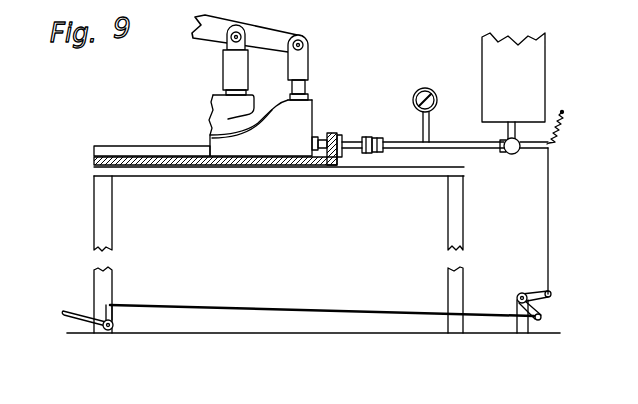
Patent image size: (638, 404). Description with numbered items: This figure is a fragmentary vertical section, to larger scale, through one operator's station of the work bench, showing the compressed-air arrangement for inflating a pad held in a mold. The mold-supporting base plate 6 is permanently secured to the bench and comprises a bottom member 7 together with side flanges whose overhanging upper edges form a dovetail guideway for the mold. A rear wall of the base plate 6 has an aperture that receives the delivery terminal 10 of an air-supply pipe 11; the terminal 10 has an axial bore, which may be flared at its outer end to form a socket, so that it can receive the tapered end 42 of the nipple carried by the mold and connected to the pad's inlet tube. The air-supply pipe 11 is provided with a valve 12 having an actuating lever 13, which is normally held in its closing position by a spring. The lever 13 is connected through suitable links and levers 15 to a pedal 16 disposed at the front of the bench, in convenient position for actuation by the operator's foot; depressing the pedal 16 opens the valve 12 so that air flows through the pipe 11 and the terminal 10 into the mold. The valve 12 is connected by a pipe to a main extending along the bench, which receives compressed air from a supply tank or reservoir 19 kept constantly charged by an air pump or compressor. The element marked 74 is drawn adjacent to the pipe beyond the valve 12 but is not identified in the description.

The mold-supporting base plate 6 is at (90, 148).
The bottom member 7 is at (182, 160).
The tapered end 42 is at (331, 135).
The delivery terminal 10 is at (341, 135).
The air-supply pipe 11 is at (400, 140).
The supply tank 19 is at (491, 68).
The control rod 74 is at (557, 131).
The valve 12 is at (508, 154).
The actuating lever 13 is at (532, 149).
The links and levers 15 is at (518, 270).
The pedal 16 is at (66, 312).